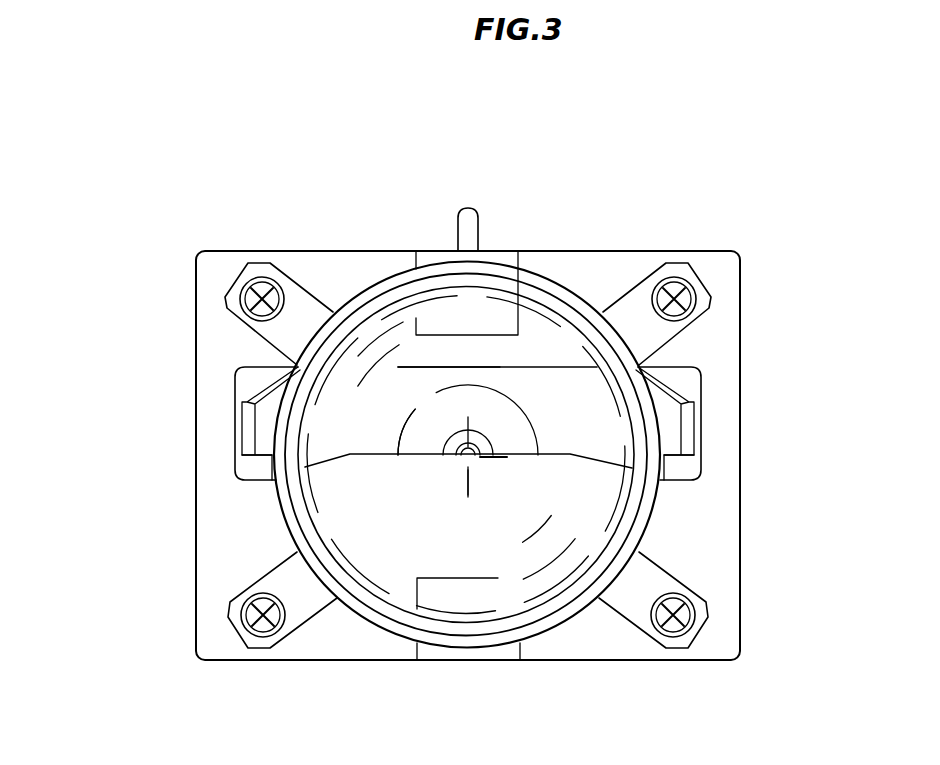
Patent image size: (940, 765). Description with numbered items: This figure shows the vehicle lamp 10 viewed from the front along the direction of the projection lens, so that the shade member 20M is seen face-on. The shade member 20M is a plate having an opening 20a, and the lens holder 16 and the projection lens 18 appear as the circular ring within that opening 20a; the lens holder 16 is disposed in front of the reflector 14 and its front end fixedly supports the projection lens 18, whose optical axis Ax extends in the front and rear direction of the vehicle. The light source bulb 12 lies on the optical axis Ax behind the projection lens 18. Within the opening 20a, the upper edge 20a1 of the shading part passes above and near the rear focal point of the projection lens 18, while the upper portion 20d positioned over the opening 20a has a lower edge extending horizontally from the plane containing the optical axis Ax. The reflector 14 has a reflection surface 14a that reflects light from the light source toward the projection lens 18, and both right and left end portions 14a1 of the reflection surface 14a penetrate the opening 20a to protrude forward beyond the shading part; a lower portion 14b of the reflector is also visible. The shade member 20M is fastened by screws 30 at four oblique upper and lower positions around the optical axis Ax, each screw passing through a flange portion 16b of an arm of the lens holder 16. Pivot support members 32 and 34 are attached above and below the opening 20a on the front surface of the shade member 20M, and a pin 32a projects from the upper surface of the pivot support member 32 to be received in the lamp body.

The vehicle lamp 10 is at (763, 183).
The light source bulb 12 is at (487, 437).
The reflector 14 is at (262, 374).
The reflection surface 14a is at (490, 378).
The right and left end portions of the reflection surface 14a1 is at (260, 445).
The lens holder lower portion 14b is at (518, 427).
The lens holder 16 is at (343, 288).
The flange portion 16b is at (672, 330).
The projection lens 18 is at (625, 522).
The shade member 20M is at (195, 273).
The opening 20a is at (460, 420).
The upper edge of the shading part 20a1 is at (390, 455).
The upper portion 20d is at (500, 350).
The screws 30 is at (670, 287).
The pivot support member 32 is at (438, 260).
The pin 32a is at (468, 218).
The pivot support member 34 is at (440, 652).
The optical axis Ax is at (470, 462).